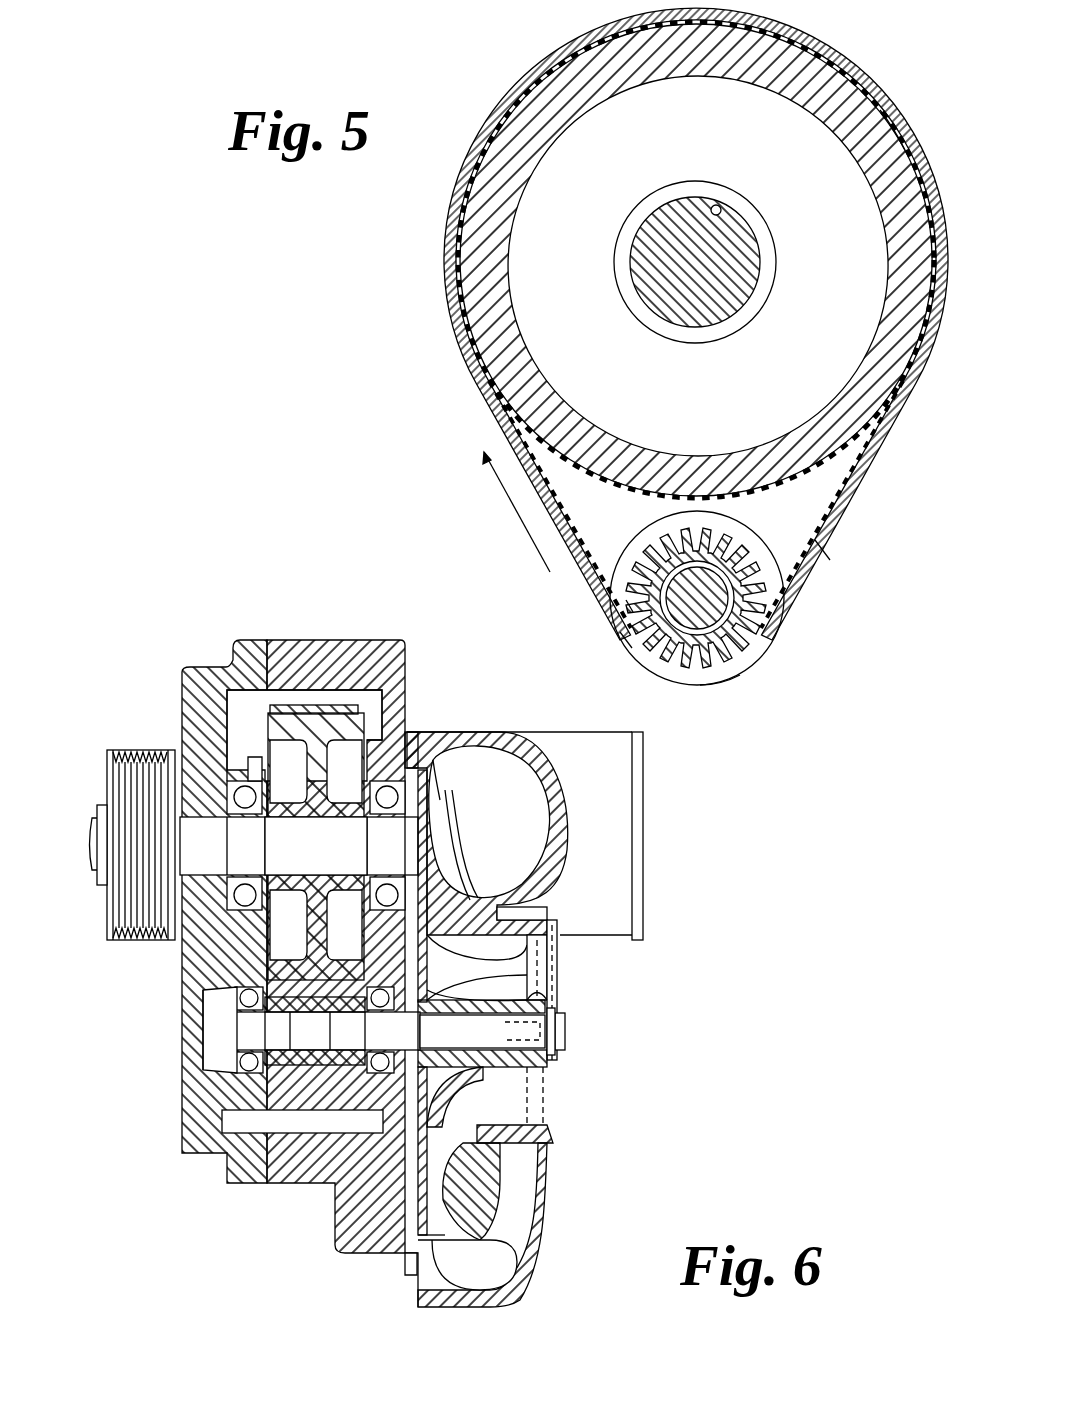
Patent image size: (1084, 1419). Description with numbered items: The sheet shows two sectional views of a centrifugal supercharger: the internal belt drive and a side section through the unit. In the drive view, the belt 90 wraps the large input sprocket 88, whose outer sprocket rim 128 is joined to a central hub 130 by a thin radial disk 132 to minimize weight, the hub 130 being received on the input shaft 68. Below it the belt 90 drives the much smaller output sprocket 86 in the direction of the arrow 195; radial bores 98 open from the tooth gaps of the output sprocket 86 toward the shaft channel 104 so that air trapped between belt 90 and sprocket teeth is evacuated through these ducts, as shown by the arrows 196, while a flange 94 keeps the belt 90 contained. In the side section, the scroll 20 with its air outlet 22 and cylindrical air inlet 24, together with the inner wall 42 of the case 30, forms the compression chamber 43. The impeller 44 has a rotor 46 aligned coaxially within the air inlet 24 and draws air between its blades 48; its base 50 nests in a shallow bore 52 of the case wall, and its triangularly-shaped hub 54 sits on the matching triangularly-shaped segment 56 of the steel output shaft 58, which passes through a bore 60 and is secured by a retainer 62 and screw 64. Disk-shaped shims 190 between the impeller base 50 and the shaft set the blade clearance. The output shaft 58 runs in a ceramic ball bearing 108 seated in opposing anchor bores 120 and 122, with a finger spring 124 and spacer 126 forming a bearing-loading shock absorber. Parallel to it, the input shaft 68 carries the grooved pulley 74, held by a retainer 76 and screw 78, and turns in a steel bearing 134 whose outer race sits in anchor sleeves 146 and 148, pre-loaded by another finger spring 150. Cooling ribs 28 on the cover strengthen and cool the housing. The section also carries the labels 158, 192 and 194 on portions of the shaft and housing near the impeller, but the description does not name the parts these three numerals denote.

In FIG. 6, the scroll 20 is at (536, 1268).
In FIG. 6, the air outlet 22 is at (643, 930).
In FIG. 6, the air inlet 24 is at (556, 1138).
In FIG. 6, the ribs 28 is at (198, 662).
In FIG. 6, the case 30 is at (366, 648).
In FIG. 6, the inner wall 42 is at (407, 716).
In FIG. 6, the compression chamber 43 is at (532, 758).
In FIG. 6, the impeller 44 is at (530, 982).
In FIG. 6, the rotor 46 is at (528, 958).
In FIG. 6, the blades 48 is at (530, 945).
In FIG. 6, the base 50 is at (432, 1233).
In FIG. 6, the shallow bore 52 is at (402, 1238).
In FIG. 6, the hub 54 is at (540, 1078).
In FIG. 6, the triangularly-shaped segment 56 is at (550, 1058).
In FIG. 5, the output shaft 58 is at (710, 588).
In FIG. 6, the bore 60 is at (440, 1010).
In FIG. 6, the retainer 62 is at (547, 1004).
In FIG. 6, the screw 64 is at (567, 1030).
In FIG. 5, the input shaft 68 is at (718, 206).
In FIG. 6, the pulley 74 is at (118, 752).
In FIG. 6, the retainer 76 is at (101, 886).
In FIG. 6, the screw 78 is at (93, 872).
In FIG. 5, the output sprocket 86 is at (764, 673).
In FIG. 6, the output sprocket 86 is at (268, 1075).
In FIG. 5, the input sprocket 88 is at (838, 467).
In FIG. 6, the input sprocket 88 is at (372, 712).
In FIG. 5, the belt 90 is at (817, 548).
In FIG. 6, the belt 90 is at (310, 706).
In FIG. 5, the flange 94 is at (683, 688).
In FIG. 5, the radial bores 98 is at (626, 640).
In FIG. 5, the channel 104 is at (630, 607).
In FIG. 6, the ball bearing 108 is at (258, 1068).
In FIG. 6, the anchor bore 120 is at (252, 1074).
In FIG. 6, the anchor bore 122 is at (413, 1070).
In FIG. 6, the finger spring 124 is at (205, 1073).
In FIG. 6, the spacer 126 is at (220, 1070).
In FIG. 5, the outer sprocket rim 128 is at (836, 92).
In FIG. 5, the central hub 130 is at (765, 217).
In FIG. 5, the radial disk 132 is at (893, 131).
In FIG. 6, the bearing 134 is at (240, 780).
In FIG. 6, the anchor sleeve 146 is at (258, 777).
In FIG. 6, the anchor sleeve 148 is at (405, 905).
In FIG. 6, the finger spring 150 is at (212, 925).
In FIG. 6, the pump shaft 158 is at (422, 1032).
In FIG. 6, the shims 190 is at (478, 933).
In FIG. 6, the volute wall 192 is at (455, 1172).
In FIG. 6, the inlet passage 194 is at (432, 797).
In FIG. 5, the arrow 195 is at (520, 542).
In FIG. 5, the arrows 196 is at (660, 540).